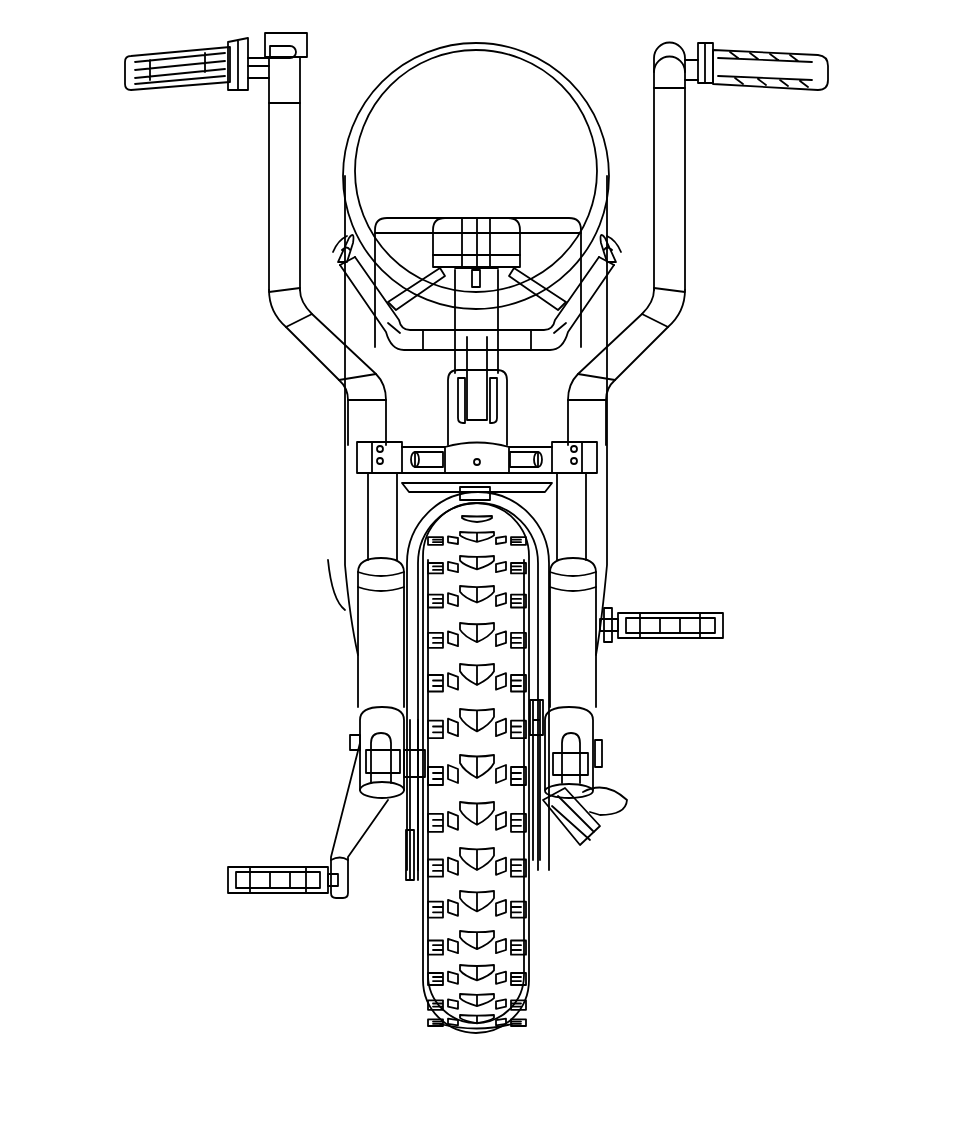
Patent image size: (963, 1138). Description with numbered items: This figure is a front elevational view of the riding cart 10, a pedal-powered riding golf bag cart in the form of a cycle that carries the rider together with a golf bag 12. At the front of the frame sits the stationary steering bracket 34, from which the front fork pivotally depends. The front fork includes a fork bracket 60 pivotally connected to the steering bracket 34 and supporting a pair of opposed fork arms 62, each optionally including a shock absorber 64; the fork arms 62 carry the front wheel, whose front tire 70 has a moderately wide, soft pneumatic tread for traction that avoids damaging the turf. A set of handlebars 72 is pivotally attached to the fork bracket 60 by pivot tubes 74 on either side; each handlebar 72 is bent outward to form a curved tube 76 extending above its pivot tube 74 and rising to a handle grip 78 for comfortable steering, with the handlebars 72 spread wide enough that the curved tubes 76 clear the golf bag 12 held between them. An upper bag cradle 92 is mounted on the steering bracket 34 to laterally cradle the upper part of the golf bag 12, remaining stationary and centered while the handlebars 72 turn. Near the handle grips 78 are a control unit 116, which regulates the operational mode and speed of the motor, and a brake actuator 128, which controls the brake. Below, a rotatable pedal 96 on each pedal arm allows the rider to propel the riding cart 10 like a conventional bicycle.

The riding cart 10 is at (152, 177).
The golf bag 12 is at (493, 176).
The steering bracket 34 is at (358, 467).
The fork bracket 60 is at (378, 475).
The fork arms 62 is at (378, 517).
The shock absorber 64 is at (375, 655).
The front tire 70 is at (512, 1018).
The handlebars 72 is at (280, 232).
The pivot tube 74 is at (587, 417).
The curved tube 76 is at (322, 358).
The handle grips 78 is at (138, 57).
The upper bag cradle 92 is at (565, 312).
The pedal 96 is at (690, 638).
The control unit 116 is at (305, 35).
The brake actuator 128 is at (793, 88).